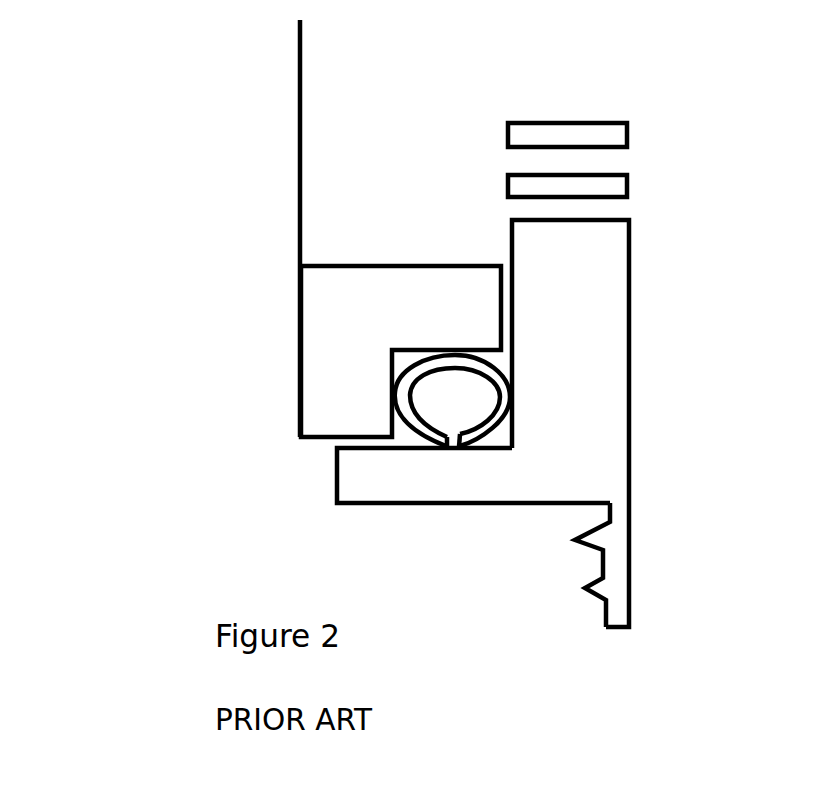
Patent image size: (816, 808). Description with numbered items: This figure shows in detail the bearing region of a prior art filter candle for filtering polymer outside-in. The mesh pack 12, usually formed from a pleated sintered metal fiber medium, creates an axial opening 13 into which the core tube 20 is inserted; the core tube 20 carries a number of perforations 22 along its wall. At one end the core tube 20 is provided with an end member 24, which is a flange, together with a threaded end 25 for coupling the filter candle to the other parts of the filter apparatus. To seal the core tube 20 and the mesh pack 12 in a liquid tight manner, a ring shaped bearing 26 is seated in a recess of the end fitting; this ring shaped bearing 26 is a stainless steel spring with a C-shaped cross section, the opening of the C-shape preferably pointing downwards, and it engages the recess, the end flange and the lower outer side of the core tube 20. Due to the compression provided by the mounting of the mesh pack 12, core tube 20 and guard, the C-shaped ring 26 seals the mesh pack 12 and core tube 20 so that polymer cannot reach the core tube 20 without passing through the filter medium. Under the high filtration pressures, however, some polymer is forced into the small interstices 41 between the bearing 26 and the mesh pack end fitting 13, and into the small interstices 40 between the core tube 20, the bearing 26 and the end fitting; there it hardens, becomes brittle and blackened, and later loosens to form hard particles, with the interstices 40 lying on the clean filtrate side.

The mesh pack 12 is at (297, 178).
The axial opening 13 is at (372, 314).
The core tube 20 is at (592, 278).
The perforations 22 is at (620, 155).
The end member 24 is at (374, 480).
The threaded end 25 is at (613, 542).
The ring shaped bearing 26 is at (513, 405).
The interstices 40 is at (507, 252).
The interstices 41 is at (323, 447).